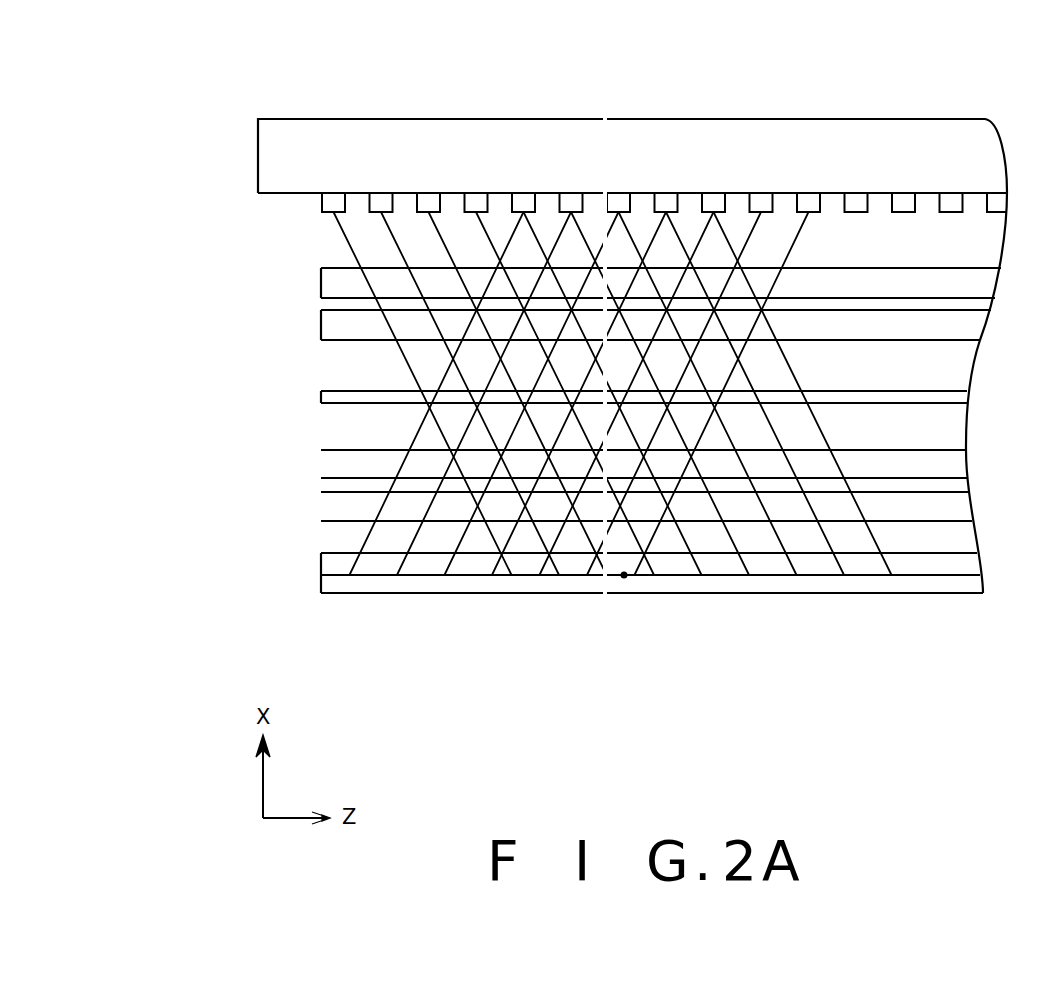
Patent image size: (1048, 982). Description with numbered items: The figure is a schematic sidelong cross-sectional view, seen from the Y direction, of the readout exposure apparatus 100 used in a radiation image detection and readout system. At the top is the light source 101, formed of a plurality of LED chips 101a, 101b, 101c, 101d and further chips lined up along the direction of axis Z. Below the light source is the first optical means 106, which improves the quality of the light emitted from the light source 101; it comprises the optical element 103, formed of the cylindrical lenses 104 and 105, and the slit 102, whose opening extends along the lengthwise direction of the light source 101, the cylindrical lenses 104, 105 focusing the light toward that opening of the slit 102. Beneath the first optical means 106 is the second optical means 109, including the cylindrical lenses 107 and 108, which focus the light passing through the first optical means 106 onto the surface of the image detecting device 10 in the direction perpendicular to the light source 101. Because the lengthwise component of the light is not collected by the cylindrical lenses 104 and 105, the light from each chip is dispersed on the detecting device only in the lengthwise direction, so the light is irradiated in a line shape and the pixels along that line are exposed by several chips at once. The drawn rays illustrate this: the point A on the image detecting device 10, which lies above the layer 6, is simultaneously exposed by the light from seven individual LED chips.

The readout exposure apparatus 100 is at (549, 368).
The light source 101 is at (599, 178).
The LED chip 101a is at (332, 200).
The LED chip 101b is at (378, 195).
The LED chip 101c is at (434, 197).
The LED chip 101d is at (480, 195).
The slit 102 is at (596, 391).
The optical element 103 is at (604, 291).
The cylindrical lens 104 is at (321, 283).
The cylindrical lens 105 is at (629, 314).
The first optical means 106 is at (579, 322).
The cylindrical lens 107 is at (321, 470).
The cylindrical lens 108 is at (321, 512).
The second optical means 109 is at (570, 483).
The photoconductor layer 6 is at (321, 568).
The image detecting device 10 is at (615, 597).
The point A is at (624, 578).